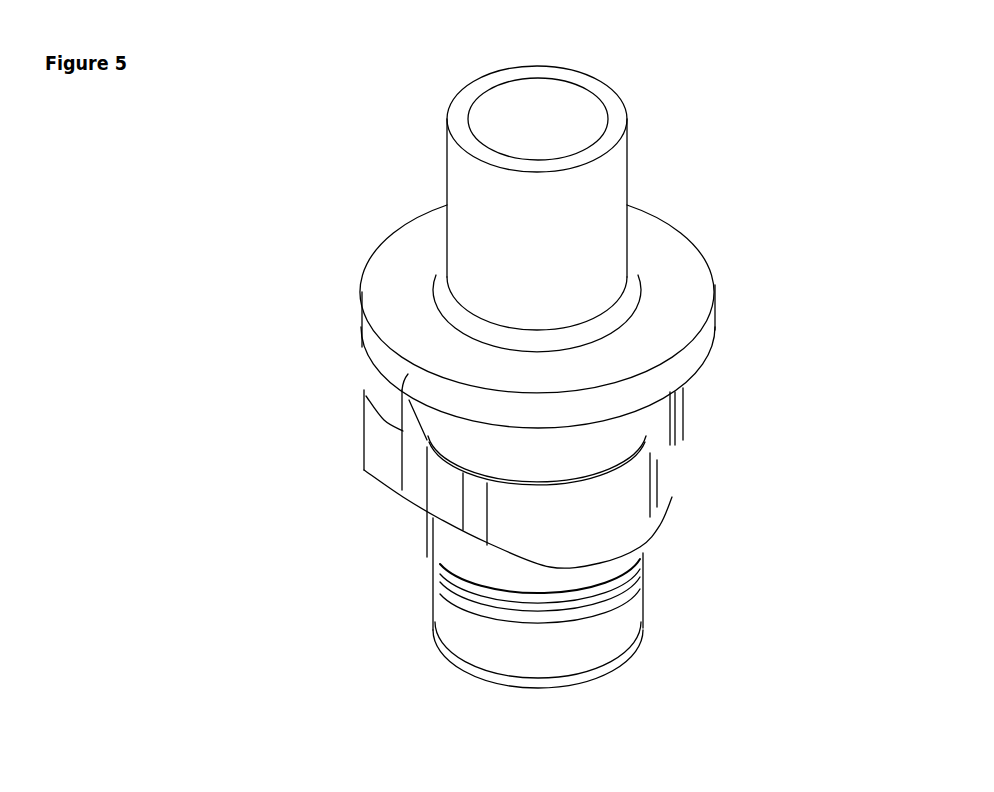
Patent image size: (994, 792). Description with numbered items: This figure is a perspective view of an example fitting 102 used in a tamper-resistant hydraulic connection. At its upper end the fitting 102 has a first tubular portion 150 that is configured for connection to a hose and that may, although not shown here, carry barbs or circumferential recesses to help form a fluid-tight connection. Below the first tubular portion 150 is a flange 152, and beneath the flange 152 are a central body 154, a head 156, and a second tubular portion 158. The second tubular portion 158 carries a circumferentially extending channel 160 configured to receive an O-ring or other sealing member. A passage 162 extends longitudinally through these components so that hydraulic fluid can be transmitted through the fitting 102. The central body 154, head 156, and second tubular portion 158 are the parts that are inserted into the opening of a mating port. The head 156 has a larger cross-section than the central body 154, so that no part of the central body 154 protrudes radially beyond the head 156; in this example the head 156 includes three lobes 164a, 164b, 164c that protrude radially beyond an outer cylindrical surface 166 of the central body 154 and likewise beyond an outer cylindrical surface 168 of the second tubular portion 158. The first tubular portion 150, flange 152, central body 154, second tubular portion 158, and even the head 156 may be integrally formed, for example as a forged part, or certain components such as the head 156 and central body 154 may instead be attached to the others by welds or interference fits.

The fitting 102 is at (877, 244).
The first tubular portion 150 is at (447, 163).
The flange 152 is at (396, 277).
The central body 154 is at (633, 427).
The head 156 is at (364, 432).
The second tubular portion 158 is at (647, 600).
The circumferentially extending channel 160 is at (547, 598).
The passage 162 is at (543, 112).
The lobe 164a is at (682, 405).
The lobe 164b is at (378, 398).
The lobe 164c is at (625, 520).
The outer cylindrical surface 166 is at (470, 440).
The outer cylindrical surface 168 is at (467, 562).